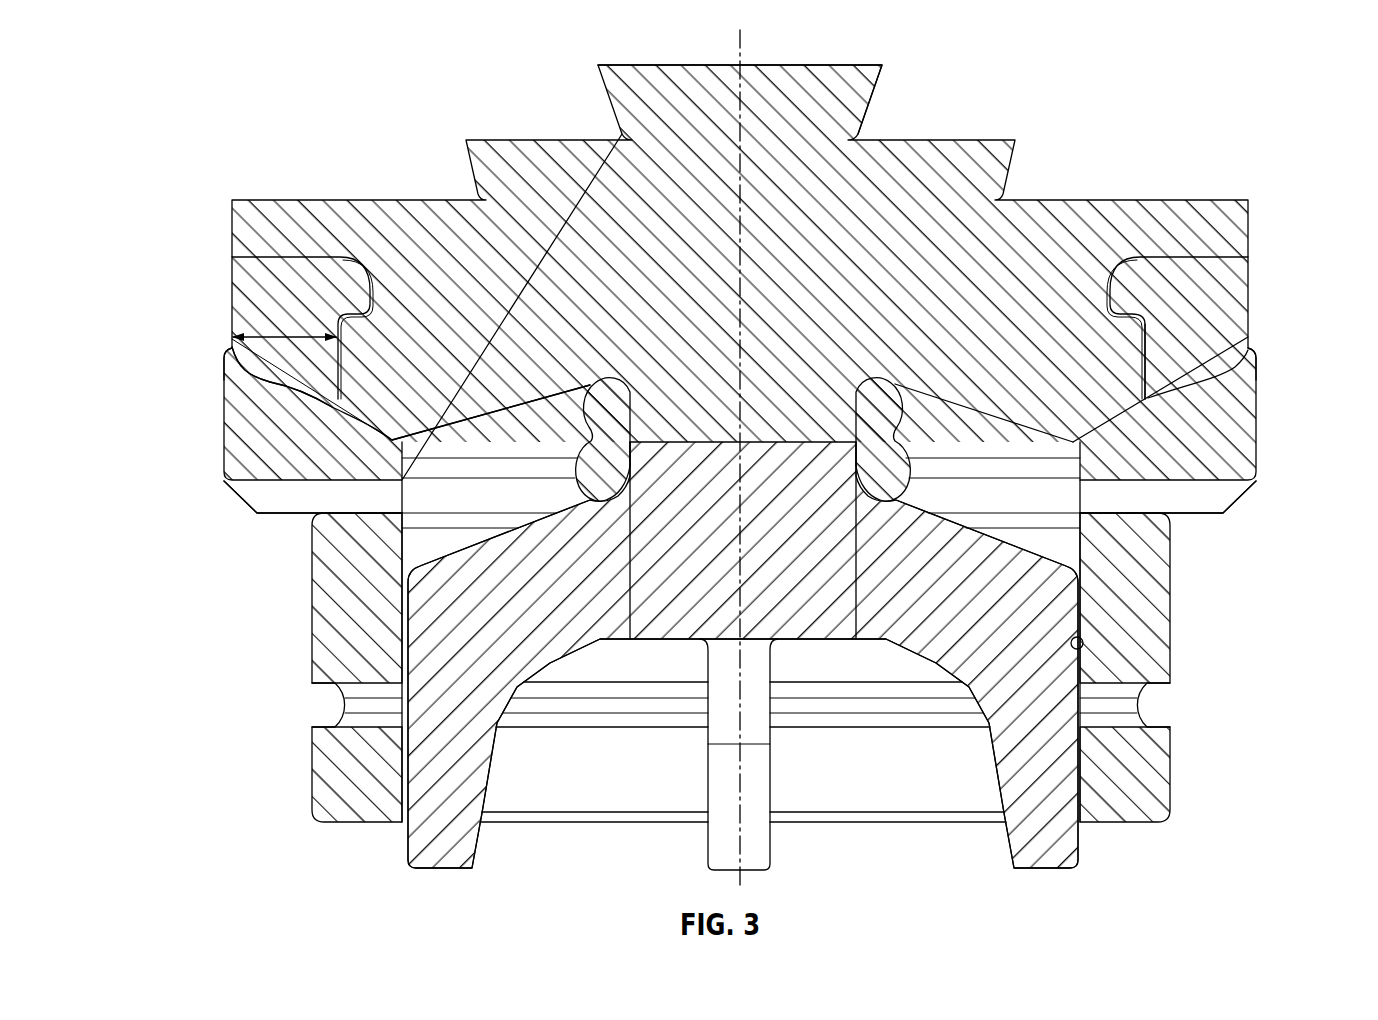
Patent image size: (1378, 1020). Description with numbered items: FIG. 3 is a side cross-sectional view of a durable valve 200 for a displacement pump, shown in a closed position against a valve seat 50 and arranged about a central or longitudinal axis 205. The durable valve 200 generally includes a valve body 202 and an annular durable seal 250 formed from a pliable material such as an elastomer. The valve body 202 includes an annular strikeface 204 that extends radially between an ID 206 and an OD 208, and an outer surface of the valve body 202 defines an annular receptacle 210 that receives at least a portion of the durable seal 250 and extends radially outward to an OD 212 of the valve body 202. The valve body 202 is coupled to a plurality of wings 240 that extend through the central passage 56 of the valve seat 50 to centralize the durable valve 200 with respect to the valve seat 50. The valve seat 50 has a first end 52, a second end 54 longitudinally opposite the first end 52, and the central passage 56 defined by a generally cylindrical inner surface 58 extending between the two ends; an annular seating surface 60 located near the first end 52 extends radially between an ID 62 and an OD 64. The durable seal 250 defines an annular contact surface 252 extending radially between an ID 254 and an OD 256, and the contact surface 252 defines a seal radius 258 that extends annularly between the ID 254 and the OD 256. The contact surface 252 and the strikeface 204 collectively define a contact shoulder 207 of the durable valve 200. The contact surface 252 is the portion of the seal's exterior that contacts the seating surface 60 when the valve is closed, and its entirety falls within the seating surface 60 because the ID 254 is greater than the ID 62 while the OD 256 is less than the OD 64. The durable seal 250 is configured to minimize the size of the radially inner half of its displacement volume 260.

The durable valve 200 is at (178, 60).
The valve body 202 is at (775, 100).
The central or longitudinal axis 205 is at (733, 43).
The OD of the valve body 212 is at (226, 220).
The durable seal 250 is at (300, 262).
The annular receptacle 210 is at (375, 308).
The seal radius 258 is at (258, 337).
The first end 52 is at (231, 347).
The displacement volume 260 is at (230, 362).
The OD of the seating surface 64 is at (298, 402).
The ID of the seating surface 62 is at (385, 442).
The seating surface 60 is at (350, 405).
The strikeface 204 is at (390, 432).
The ID of the strikeface 206 is at (1068, 442).
The OD of the strikeface 208 is at (1136, 397).
The OD of the contact surface 256 is at (1263, 348).
The contact surface 252 is at (1240, 366).
The ID of the contact surface 254 is at (1170, 410).
The contact shoulder 207 is at (1195, 476).
The central passage 56 is at (1070, 542).
The inner surface 58 is at (1083, 640).
The second end 54 is at (1145, 824).
The valve seat 50 is at (211, 708).
The wings 240 is at (445, 850).